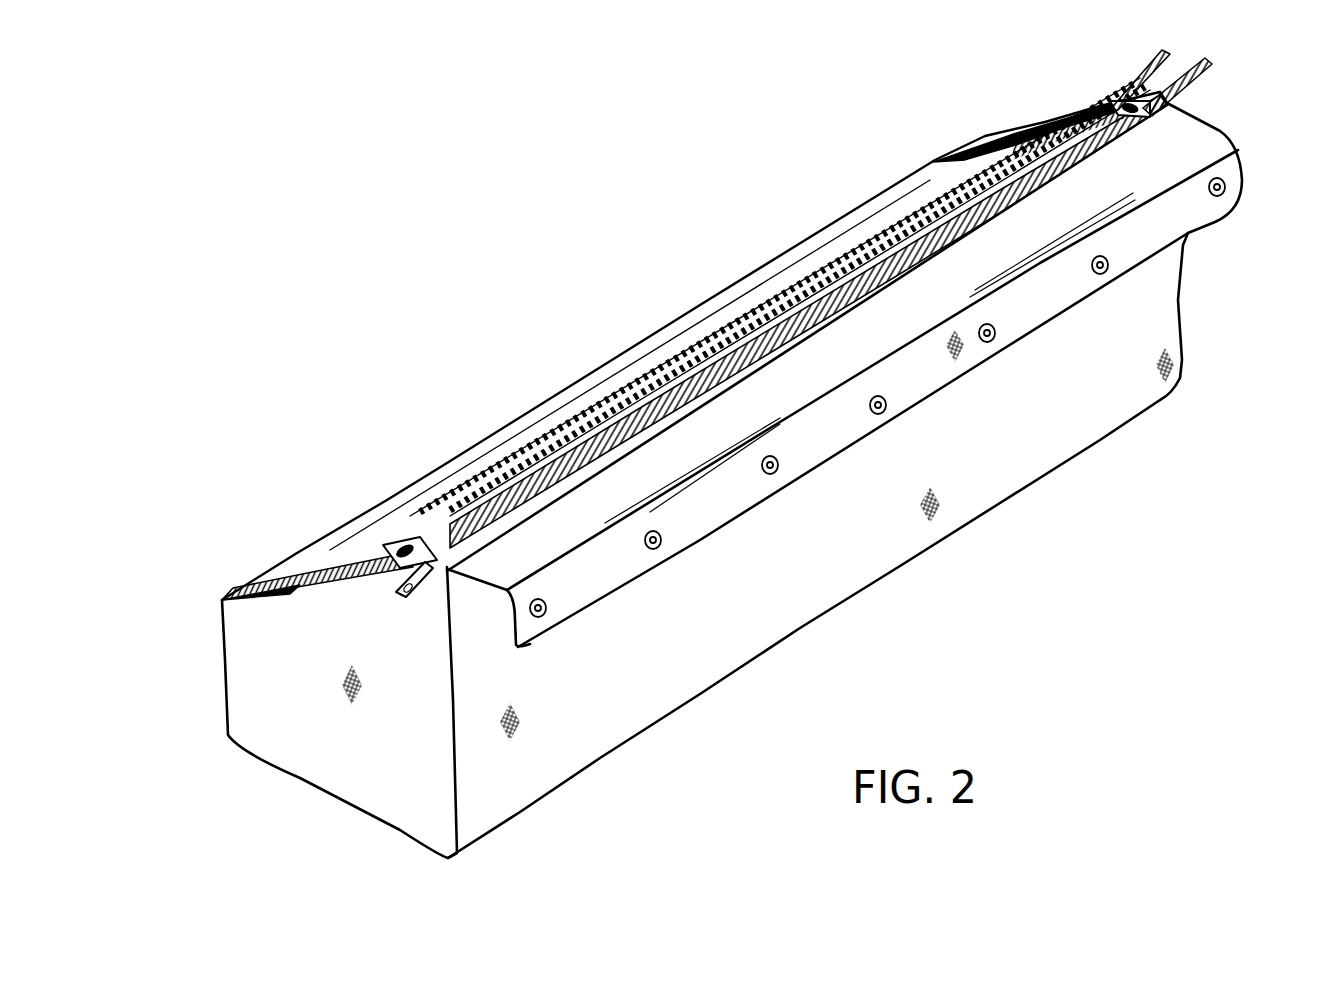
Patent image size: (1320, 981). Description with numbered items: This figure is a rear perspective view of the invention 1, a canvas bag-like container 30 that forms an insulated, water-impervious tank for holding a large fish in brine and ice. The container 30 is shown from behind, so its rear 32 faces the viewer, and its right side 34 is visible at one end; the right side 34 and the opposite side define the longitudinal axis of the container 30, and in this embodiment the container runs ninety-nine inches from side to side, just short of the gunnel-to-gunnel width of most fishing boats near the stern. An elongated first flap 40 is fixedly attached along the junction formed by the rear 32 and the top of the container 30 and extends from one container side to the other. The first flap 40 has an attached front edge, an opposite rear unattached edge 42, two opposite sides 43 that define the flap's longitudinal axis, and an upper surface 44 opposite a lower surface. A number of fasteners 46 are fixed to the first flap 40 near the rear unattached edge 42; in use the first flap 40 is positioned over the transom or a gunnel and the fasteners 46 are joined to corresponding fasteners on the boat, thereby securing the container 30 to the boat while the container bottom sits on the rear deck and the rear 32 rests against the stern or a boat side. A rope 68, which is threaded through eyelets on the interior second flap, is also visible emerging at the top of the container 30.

The invention 1 is at (758, 440).
The container 30 is at (717, 311).
The rear 32 is at (1082, 427).
The right side 34 is at (385, 742).
The first flap 40 is at (882, 362).
The rear unattached edge 42 is at (643, 578).
The sides 43 is at (1228, 130).
The upper surface 44 is at (998, 264).
The fasteners 46 is at (772, 477).
The rope 68 is at (1140, 69).